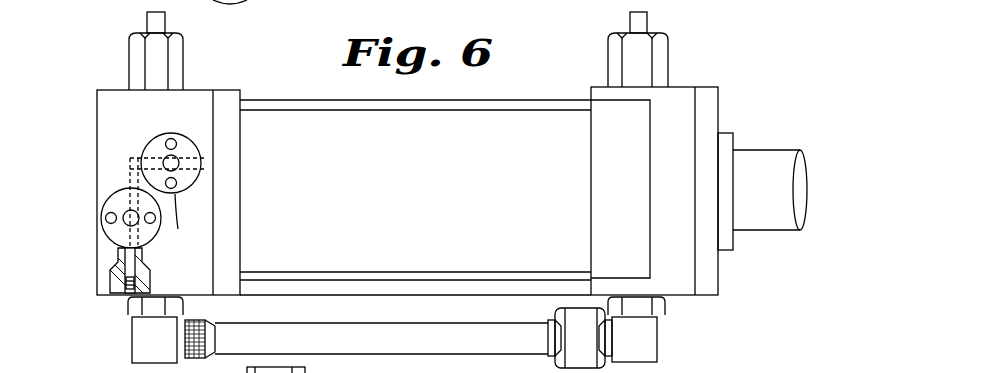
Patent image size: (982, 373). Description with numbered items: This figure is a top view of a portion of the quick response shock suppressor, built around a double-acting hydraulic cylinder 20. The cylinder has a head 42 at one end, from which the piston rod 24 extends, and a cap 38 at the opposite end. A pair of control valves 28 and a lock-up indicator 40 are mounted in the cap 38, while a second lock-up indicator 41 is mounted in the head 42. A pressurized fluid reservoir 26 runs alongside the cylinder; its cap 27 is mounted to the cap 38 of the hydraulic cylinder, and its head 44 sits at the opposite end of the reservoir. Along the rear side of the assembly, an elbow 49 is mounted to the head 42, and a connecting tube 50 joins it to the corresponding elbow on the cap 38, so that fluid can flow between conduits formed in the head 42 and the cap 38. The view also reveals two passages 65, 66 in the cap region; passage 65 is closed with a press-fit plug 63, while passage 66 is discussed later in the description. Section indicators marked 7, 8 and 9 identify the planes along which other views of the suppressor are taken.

The double-acting hydraulic cylinder 20 is at (518, 110).
The piston rod 24 is at (770, 150).
The pressurized fluid reservoir 26 is at (558, 99).
The cap 27 is at (240, 92).
The control valves 28 is at (178, 229).
The cap 38 is at (192, 90).
The lock-up indicator 40 is at (183, 52).
The second lock-up indicator 41 is at (668, 53).
The head 42 is at (682, 87).
The head 44 is at (652, 125).
The elbow 49 is at (658, 341).
The connecting tube 50 is at (500, 353).
The press-fit plug 63 is at (128, 288).
The passage 65 is at (126, 233).
The passage 66 is at (203, 158).
The section line 7- 7 is at (70, 163).
The section line 8- 8 is at (50, 218).
The section line 9- 9 is at (100, 195).